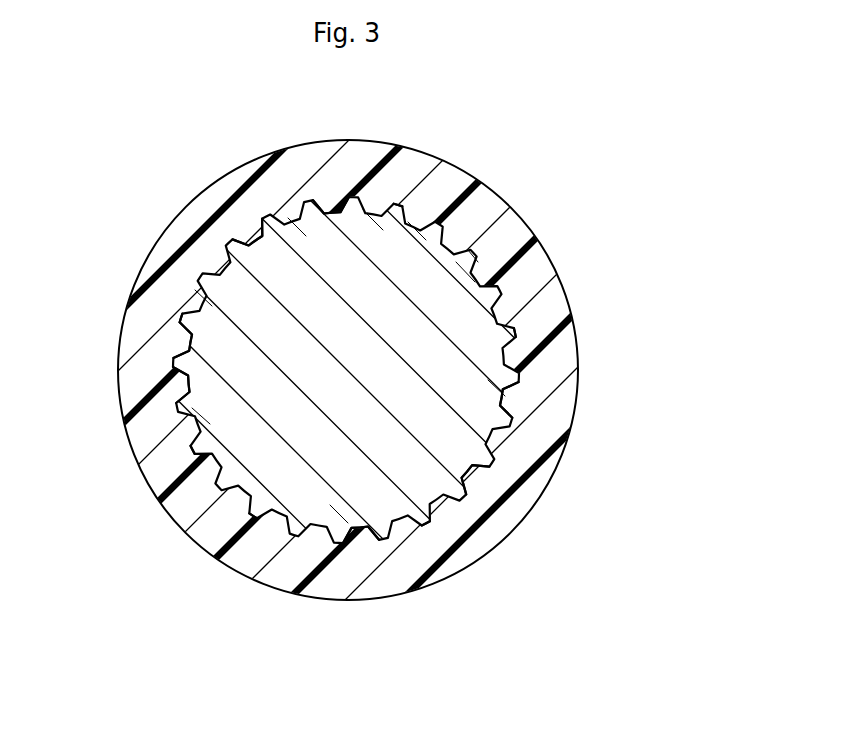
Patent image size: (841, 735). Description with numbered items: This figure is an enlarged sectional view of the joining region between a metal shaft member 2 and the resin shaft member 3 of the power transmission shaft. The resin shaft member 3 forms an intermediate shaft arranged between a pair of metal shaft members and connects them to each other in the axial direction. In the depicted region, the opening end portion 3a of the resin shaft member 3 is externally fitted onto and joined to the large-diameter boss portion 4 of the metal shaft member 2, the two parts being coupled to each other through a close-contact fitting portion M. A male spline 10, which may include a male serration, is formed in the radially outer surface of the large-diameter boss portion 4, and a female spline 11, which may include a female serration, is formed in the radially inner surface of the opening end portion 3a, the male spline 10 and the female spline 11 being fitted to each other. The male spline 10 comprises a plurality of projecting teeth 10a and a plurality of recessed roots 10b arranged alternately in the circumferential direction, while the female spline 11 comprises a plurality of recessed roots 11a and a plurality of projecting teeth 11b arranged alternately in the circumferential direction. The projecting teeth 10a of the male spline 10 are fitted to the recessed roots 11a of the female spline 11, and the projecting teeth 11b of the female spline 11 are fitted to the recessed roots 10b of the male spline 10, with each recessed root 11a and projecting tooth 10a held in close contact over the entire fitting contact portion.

The metal shaft member 2 is at (353, 410).
The resin shaft member 3 is at (163, 232).
The opening end portion 3a is at (192, 492).
The large-diameter boss portion 4 is at (503, 430).
The male spline 10 is at (519, 345).
The projecting teeth 10a is at (498, 300).
The recessed roots 10b is at (342, 196).
The female spline 11 is at (373, 218).
The recessed roots 11a is at (467, 270).
The projecting teeth 11b is at (205, 298).
The close-contact fitting portion M is at (490, 255).